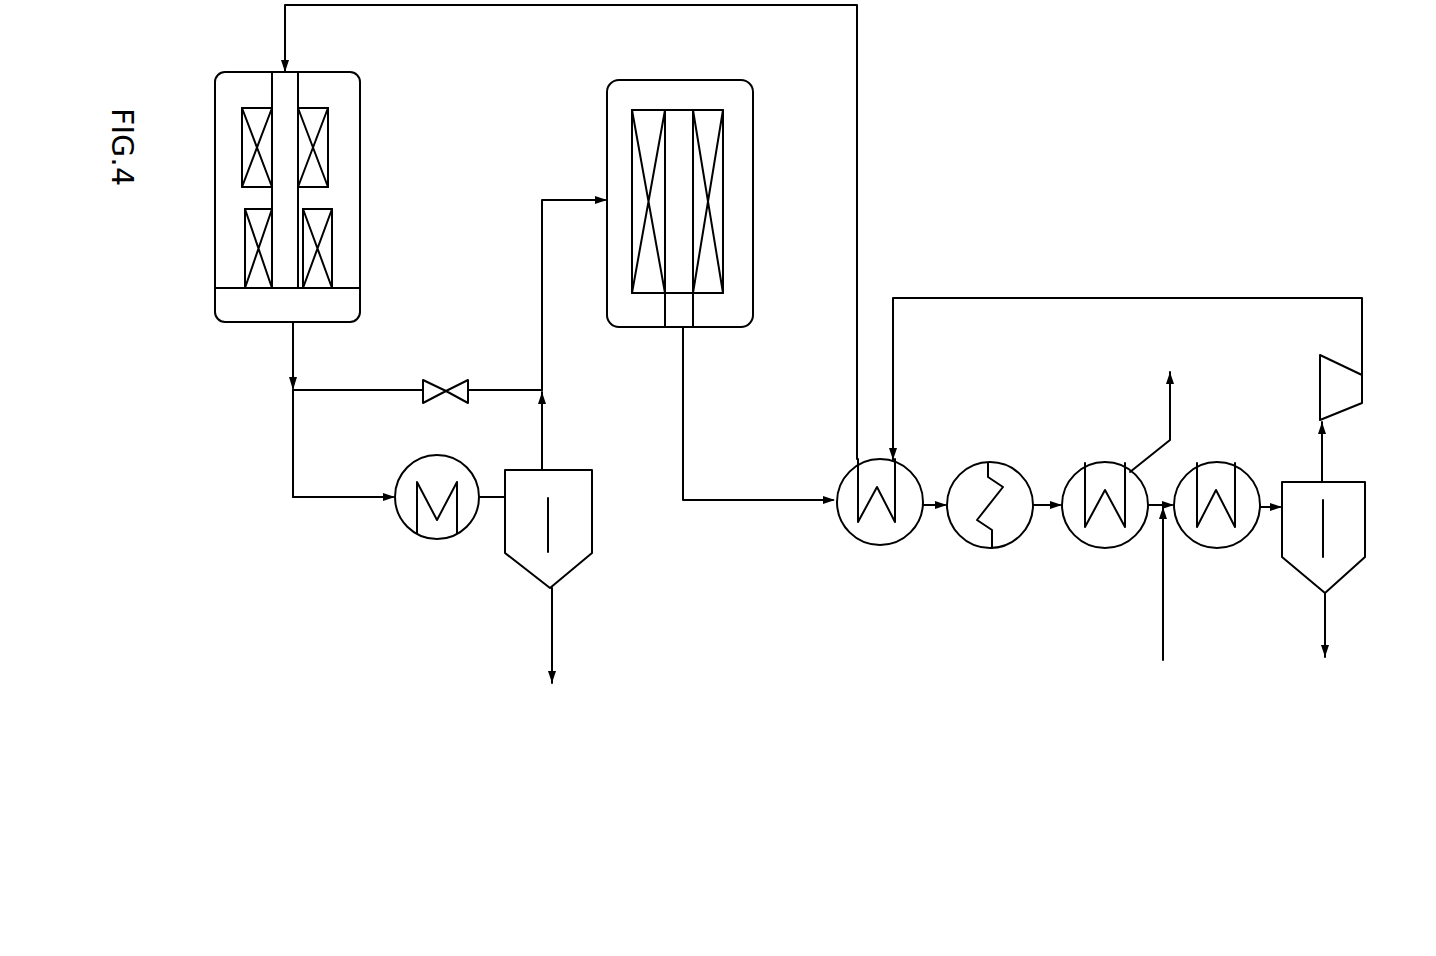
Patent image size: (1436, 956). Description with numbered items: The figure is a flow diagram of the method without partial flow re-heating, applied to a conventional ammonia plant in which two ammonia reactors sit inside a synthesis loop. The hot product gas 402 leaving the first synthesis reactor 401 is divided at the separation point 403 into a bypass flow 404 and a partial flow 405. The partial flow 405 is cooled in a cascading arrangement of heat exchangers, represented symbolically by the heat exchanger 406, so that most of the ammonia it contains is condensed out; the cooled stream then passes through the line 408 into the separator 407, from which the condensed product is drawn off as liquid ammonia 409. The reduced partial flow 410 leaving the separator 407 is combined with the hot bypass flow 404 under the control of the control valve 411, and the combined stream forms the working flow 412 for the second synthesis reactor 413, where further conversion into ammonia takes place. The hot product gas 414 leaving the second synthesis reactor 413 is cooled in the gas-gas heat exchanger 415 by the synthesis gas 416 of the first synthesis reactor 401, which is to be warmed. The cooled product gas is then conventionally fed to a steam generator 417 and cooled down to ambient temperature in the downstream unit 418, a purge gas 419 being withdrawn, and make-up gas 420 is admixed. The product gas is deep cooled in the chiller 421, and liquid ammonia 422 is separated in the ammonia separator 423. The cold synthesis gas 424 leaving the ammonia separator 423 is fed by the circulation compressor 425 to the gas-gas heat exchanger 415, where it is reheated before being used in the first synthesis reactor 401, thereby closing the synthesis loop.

The first synthesis reactor 401 is at (218, 322).
The hot product gas 402 is at (295, 352).
The separation point 403 is at (293, 390).
The bypass flow 404 is at (352, 392).
The partial flow 405 is at (293, 497).
The heat exchanger 406 is at (398, 515).
The separator 407 is at (580, 560).
The pump outlet line 408 is at (487, 497).
The liquid ammonia 409 is at (553, 650).
The reduced partial flow 410 is at (547, 432).
The control valve 411 is at (446, 380).
The working flow 412 is at (540, 294).
The second synthesis reactor 413 is at (625, 330).
The hot product gas 414 is at (686, 398).
The gas-gas heat exchanger 415 is at (857, 545).
The synthesis gas 416 is at (897, 398).
The steam generator 417 is at (982, 548).
The heat exchanger 418 is at (1083, 547).
The purge gas 419 is at (1168, 405).
The make-up gas 420 is at (1160, 632).
The chiller 421 is at (1212, 549).
The liquid ammonia 422 is at (1327, 648).
The ammonia separator 423 is at (1352, 580).
The cold synthesis gas 424 is at (1325, 458).
The circulation compressor 425 is at (1322, 378).